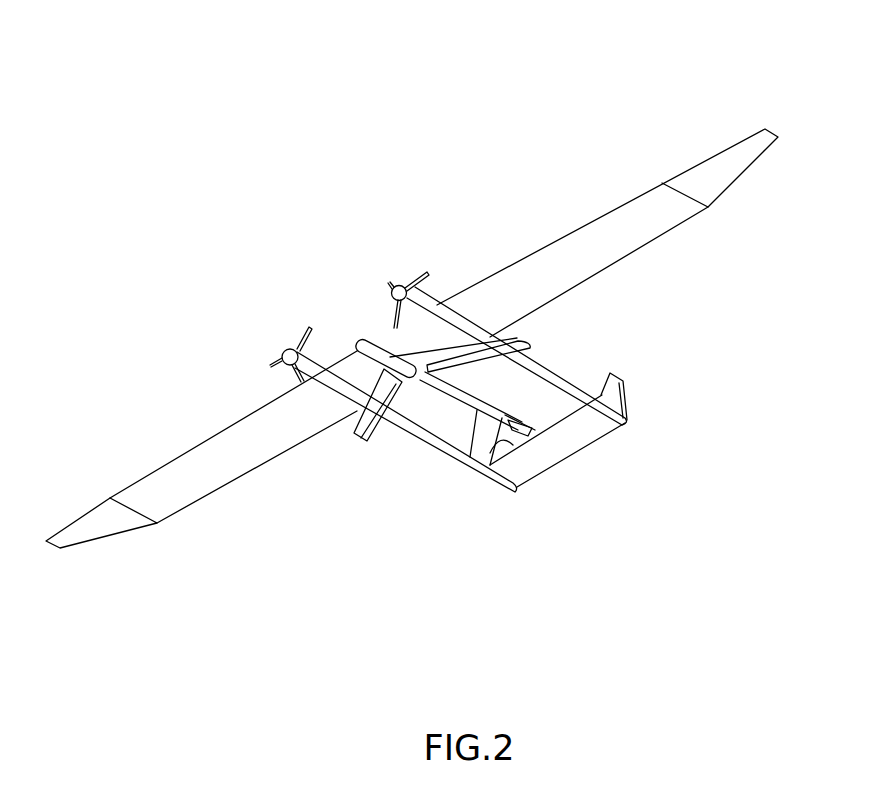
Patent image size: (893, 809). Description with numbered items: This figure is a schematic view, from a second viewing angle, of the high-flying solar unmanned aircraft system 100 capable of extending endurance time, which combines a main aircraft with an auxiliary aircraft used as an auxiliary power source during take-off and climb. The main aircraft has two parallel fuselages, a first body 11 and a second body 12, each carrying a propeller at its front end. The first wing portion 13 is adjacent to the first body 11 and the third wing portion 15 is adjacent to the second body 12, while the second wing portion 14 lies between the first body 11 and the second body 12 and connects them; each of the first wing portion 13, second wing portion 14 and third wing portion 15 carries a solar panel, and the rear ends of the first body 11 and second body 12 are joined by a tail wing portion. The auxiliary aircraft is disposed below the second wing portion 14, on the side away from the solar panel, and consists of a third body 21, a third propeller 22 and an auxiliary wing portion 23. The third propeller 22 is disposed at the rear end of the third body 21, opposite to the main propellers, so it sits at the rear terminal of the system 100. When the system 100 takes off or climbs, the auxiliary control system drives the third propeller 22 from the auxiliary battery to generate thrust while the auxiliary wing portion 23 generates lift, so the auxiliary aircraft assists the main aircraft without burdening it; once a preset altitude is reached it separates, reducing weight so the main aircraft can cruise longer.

The high-flying solar unmanned aircraft system 100 is at (69, 42).
The first body 11 is at (410, 433).
The second body 12 is at (567, 375).
The first wing portion 13 is at (212, 438).
The second wing portion 14 is at (390, 333).
The third wing portion 15 is at (617, 208).
The third body 21 is at (468, 410).
The third propeller 22 is at (512, 430).
The auxiliary wing portion 23 is at (523, 338).